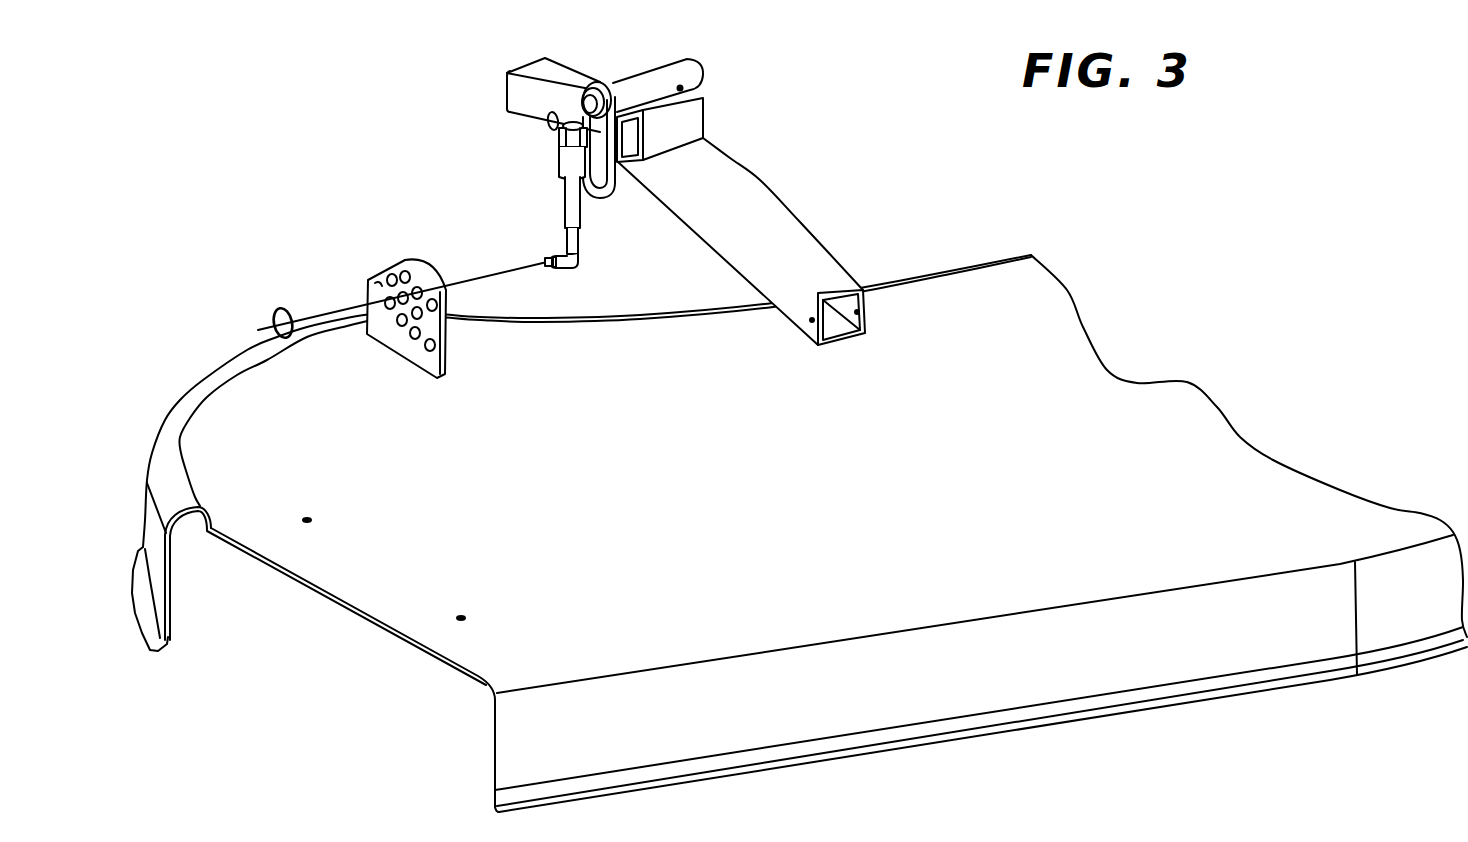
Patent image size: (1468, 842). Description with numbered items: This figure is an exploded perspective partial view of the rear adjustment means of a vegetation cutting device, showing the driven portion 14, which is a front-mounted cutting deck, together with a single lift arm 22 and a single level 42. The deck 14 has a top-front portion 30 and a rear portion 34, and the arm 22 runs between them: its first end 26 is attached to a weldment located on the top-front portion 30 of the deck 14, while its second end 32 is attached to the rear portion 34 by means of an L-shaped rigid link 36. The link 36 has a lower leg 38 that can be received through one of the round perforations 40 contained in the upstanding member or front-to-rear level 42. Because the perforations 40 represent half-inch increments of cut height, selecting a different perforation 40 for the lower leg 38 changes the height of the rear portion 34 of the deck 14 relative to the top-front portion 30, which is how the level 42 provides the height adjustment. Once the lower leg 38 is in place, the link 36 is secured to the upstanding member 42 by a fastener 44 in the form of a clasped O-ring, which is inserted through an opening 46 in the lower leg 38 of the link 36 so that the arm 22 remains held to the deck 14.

The driven portion 14 is at (799, 533).
The lift arm 22 is at (763, 221).
The first end 26 is at (833, 270).
The top-front portion 30 is at (780, 587).
The second end 32 is at (515, 93).
The rear portion 34 is at (608, 391).
The rigid link 36 is at (560, 183).
The lower leg 38 is at (547, 259).
The round perforations 40 is at (405, 212).
The upstanding member 42 is at (379, 286).
The fastener 44 is at (280, 308).
The opening 46 is at (557, 263).